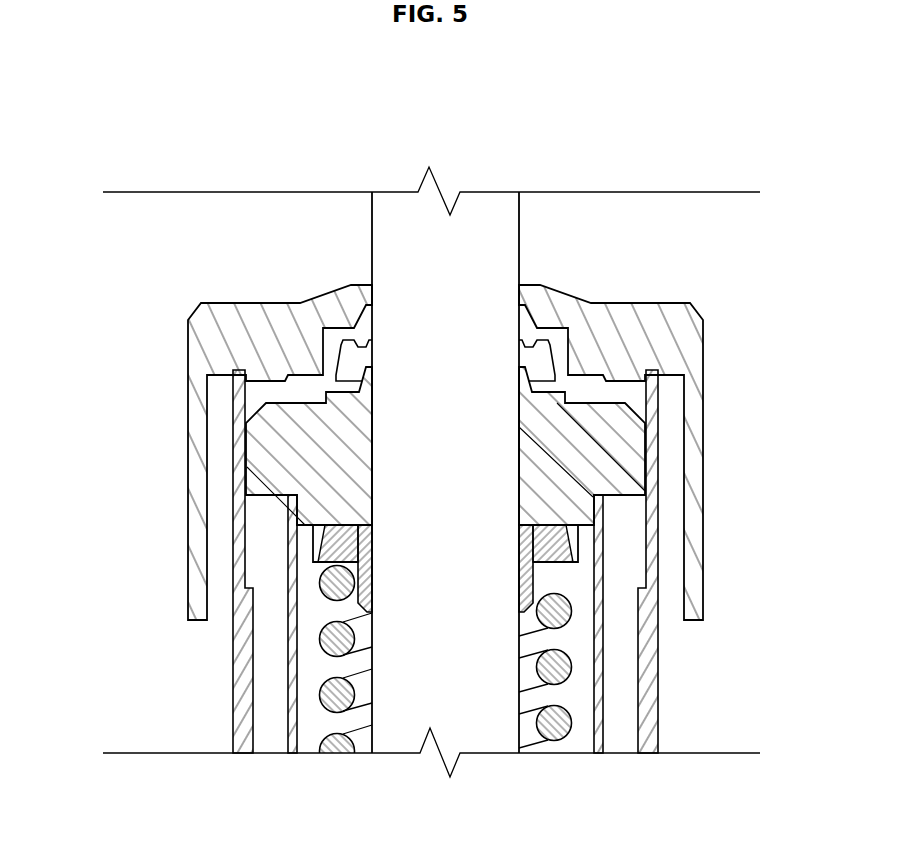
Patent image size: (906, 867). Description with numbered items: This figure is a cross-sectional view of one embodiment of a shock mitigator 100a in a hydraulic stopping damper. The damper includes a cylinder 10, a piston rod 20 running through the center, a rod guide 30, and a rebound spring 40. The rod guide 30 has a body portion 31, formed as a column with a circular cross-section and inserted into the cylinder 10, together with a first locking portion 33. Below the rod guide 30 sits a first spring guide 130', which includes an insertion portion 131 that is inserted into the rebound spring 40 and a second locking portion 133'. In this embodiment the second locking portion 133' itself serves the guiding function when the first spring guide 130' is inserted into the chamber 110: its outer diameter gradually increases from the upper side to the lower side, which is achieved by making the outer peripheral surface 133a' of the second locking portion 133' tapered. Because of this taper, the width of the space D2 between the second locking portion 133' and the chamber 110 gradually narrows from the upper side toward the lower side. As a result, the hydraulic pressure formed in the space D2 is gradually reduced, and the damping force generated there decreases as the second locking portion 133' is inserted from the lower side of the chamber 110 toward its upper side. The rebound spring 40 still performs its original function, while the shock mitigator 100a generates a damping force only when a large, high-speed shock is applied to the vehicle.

The piston rod 20 is at (489, 215).
The rod guide 30 is at (640, 414).
The first locking portion 33 is at (277, 453).
The body portion 31 is at (320, 537).
The cylinder 10 is at (645, 712).
The first spring guide 130' is at (300, 593).
The second locking portion 133' is at (335, 575).
The outer peripheral surface 133a' is at (329, 553).
The insertion portion 131 is at (357, 602).
The rebound spring 40 is at (552, 728).
The space D2 is at (560, 536).
The shock mitigator 100a is at (578, 575).
The chamber 110 is at (565, 546).